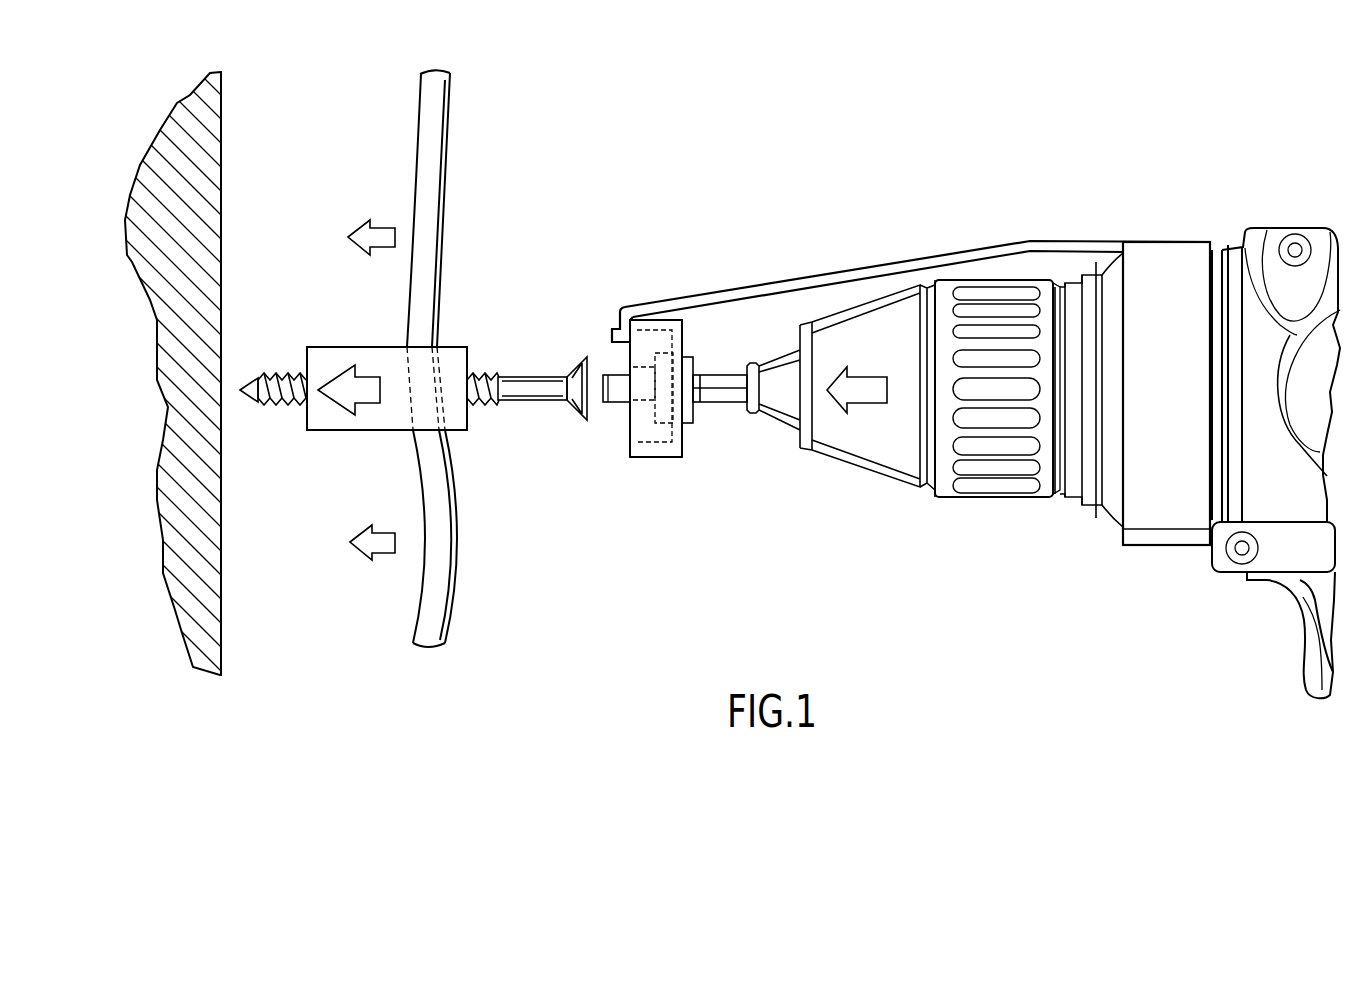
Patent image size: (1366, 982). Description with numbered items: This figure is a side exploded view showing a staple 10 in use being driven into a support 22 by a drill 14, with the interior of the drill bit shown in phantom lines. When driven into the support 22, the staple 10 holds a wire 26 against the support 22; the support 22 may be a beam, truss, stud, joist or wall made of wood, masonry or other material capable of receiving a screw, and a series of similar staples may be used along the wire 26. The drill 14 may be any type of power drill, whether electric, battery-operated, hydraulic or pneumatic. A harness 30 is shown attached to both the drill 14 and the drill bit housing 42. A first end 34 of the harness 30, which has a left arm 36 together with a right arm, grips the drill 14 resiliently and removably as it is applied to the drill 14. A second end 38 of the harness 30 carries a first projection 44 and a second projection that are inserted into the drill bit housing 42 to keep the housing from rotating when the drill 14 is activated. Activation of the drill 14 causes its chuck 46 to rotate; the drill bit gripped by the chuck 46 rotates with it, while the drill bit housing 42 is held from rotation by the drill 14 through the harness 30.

The staple 10 is at (463, 347).
The drill 14 is at (1240, 247).
The support 22 is at (222, 442).
The wire 26 is at (455, 457).
The harness 30 is at (927, 252).
The first end 34 is at (1160, 242).
The left arm 36 is at (1185, 396).
The second end 38 is at (612, 338).
The drill bit housing 42 is at (685, 328).
The first projection 44 is at (650, 330).
The chuck 46 is at (865, 437).